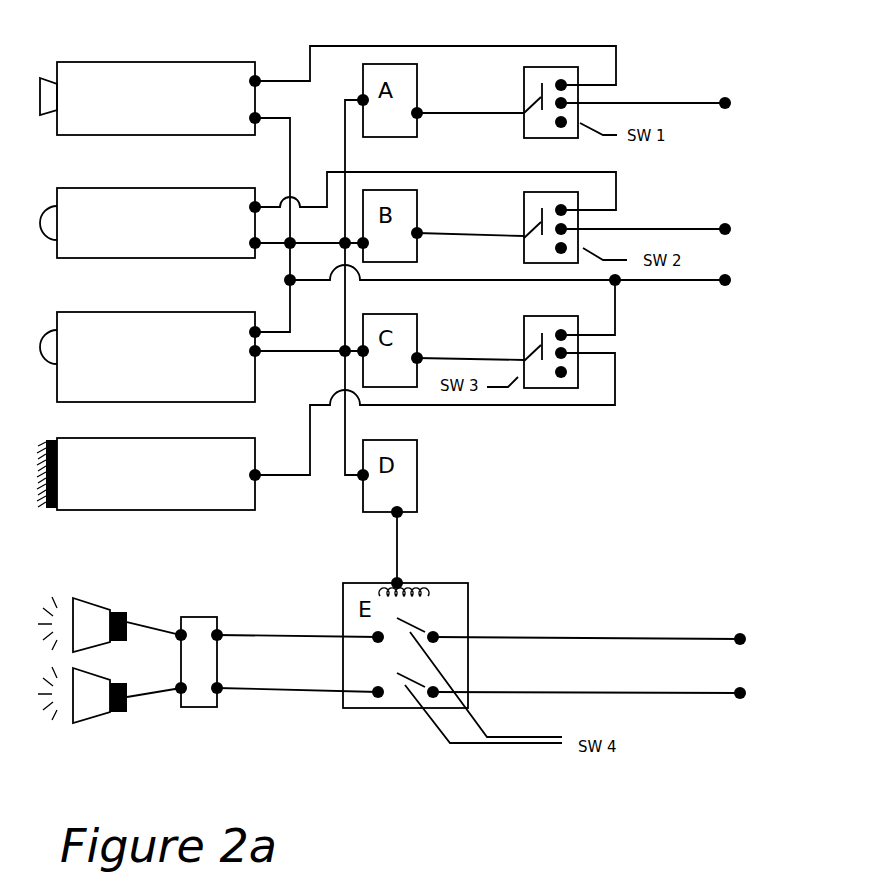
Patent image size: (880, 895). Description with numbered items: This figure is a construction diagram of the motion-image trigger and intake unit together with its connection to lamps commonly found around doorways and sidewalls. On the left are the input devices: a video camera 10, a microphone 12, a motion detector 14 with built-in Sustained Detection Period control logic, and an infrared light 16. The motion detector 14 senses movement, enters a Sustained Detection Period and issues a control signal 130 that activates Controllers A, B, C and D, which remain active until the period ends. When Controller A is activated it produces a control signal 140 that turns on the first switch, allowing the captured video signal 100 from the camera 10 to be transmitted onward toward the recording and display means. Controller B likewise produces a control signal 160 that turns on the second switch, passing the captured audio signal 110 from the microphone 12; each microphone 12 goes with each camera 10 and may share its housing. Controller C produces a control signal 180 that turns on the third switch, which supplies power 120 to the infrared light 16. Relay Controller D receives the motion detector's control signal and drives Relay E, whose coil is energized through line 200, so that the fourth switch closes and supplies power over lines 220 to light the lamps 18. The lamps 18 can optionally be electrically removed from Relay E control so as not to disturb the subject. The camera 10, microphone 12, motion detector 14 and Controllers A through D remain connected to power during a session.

The video camera 10 is at (147, 98).
The microphone 12 is at (147, 223).
The motion detector 14 is at (147, 357).
The infrared light 16 is at (146, 474).
The lamp 18 is at (93, 659).
The video signal 100 is at (493, 58).
The audio signal 110 is at (646, 211).
The power 120 is at (493, 370).
The control signal 130 is at (318, 305).
The control signal 140 is at (470, 95).
The control signal 160 is at (470, 218).
The control signal 180 is at (470, 342).
The relay coil line 200 is at (433, 554).
The speaker signal line 220 is at (481, 672).